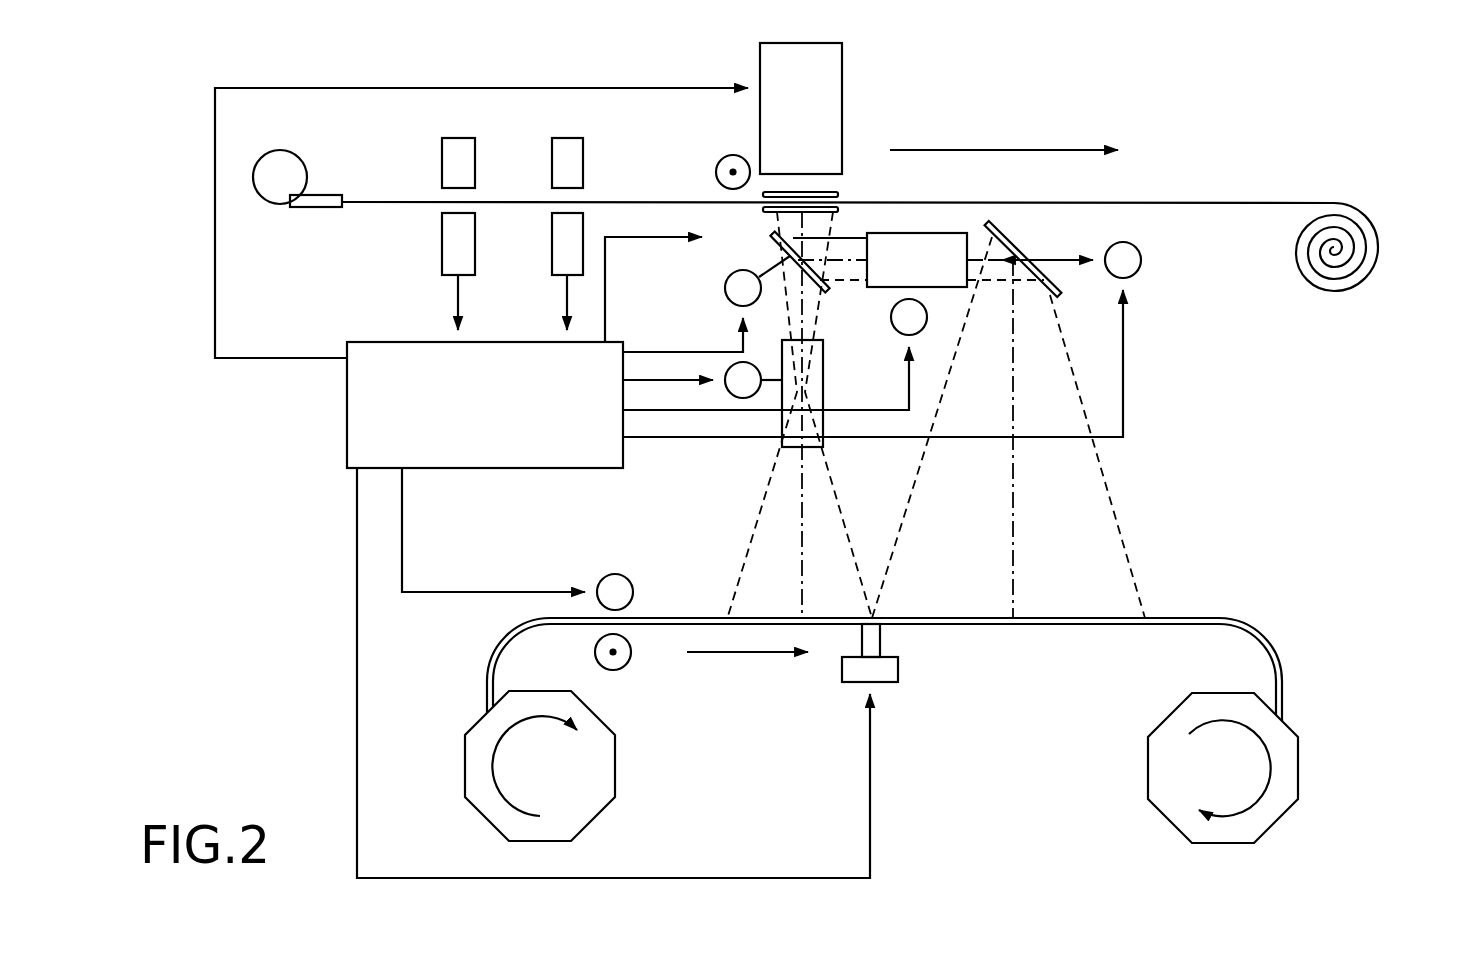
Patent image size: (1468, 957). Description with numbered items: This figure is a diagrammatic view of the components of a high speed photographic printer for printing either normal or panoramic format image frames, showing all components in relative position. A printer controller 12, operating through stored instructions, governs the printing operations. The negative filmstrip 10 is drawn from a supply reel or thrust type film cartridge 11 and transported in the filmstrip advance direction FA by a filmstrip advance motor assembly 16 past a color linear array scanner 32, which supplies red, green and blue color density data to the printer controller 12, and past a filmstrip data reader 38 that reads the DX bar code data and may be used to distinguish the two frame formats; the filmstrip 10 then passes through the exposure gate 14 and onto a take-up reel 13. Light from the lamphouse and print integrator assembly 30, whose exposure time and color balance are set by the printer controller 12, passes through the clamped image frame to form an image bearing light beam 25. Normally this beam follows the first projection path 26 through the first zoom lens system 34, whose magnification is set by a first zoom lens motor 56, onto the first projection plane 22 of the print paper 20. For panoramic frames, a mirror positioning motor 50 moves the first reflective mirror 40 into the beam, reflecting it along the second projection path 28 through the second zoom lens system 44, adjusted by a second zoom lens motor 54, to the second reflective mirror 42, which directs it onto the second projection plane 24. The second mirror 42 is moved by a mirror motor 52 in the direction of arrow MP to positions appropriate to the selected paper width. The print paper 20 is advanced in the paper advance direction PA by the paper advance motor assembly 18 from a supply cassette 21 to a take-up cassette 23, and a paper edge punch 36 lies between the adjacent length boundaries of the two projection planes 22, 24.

The negative filmstrip 10 is at (1208, 201).
The supply reel or thrust type film cartridge 11 is at (291, 153).
The printer controller 12 is at (347, 427).
The take-up reel 13 is at (1379, 234).
The exposure gate 14 is at (853, 176).
The filmstrip advance motor assembly 16 is at (717, 165).
The paper advance motor assembly 18 is at (614, 574).
The print paper 20 is at (1225, 618).
The supply cassette 21 is at (472, 812).
The first or N projection plane 22 is at (785, 606).
The take-up cassette 23 is at (1298, 768).
The second or P projection plane 24 is at (957, 606).
The image bearing light beam 25 is at (824, 225).
The first or N projection path 26 is at (758, 464).
The second projection path 28 is at (956, 316).
The lamphouse and print integrator assembly 30 is at (842, 68).
The color linear array scanner 32 is at (442, 250).
The first or normal projection zoom lens system 34 is at (823, 362).
The paper edge punch 36 is at (898, 668).
The filmstrip data reader 38 is at (552, 250).
The first movable reflective mirror 40 is at (774, 242).
The second movable reflective mirror 42 is at (1012, 232).
The second zoom lens system 44 is at (910, 233).
The mirror positioning motor 50 is at (725, 290).
The mirror motor 52 is at (1136, 276).
The second zoom lens motor 54 is at (891, 317).
The first zoom lens motor 56 is at (730, 392).
The filmstrip advance direction FA is at (1004, 136).
The paper advance direction PA is at (747, 674).
The mirror movement direction MP is at (1104, 262).